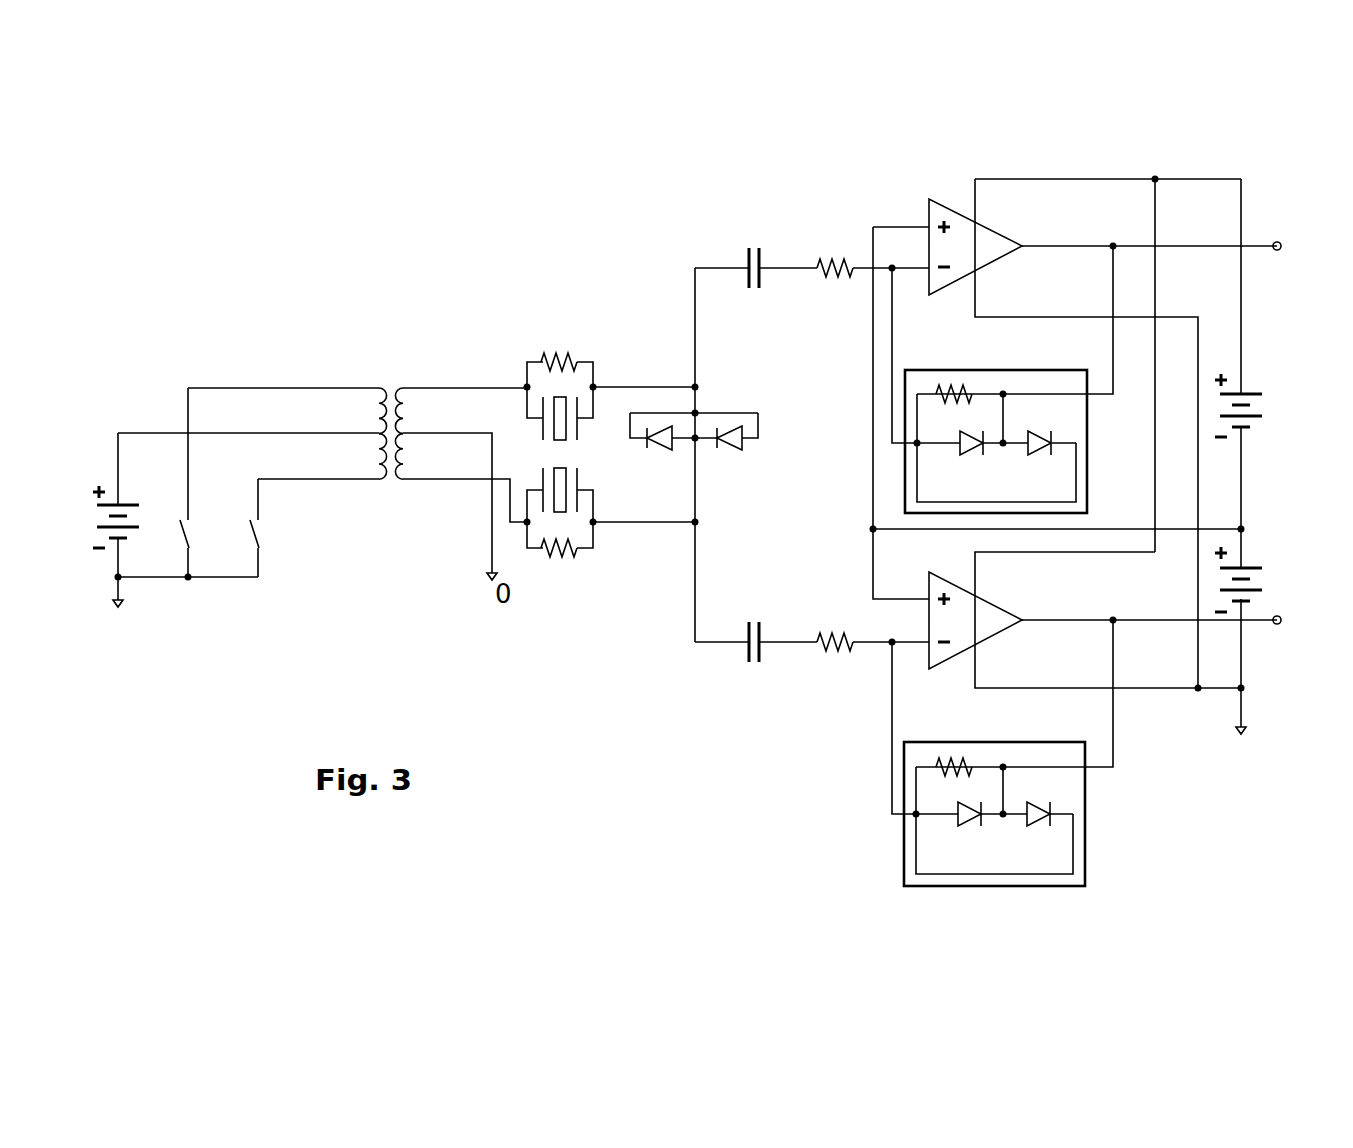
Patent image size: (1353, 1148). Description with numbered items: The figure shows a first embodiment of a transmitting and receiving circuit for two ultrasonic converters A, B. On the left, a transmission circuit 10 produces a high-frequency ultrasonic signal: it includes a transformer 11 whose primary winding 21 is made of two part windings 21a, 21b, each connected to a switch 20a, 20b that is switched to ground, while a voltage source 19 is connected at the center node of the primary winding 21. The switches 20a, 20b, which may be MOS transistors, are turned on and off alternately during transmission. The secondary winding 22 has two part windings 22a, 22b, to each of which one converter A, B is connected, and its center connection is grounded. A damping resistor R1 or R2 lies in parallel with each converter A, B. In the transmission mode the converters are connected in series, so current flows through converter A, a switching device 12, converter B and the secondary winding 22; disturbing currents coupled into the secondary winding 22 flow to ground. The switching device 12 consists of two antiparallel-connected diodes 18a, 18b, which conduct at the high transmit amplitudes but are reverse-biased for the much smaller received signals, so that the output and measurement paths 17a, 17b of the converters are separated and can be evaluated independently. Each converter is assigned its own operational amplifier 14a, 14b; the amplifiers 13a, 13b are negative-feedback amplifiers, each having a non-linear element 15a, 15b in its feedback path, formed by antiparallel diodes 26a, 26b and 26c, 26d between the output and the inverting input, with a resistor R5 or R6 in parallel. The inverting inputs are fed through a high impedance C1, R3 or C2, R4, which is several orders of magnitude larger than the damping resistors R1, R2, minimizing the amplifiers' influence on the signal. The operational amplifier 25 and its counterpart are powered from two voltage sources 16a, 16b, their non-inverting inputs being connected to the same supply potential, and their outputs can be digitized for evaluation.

The transmission circuit 10 is at (193, 335).
The transformer 11 is at (386, 333).
The switching device 12 is at (746, 391).
The negative-feedback amplifier 13a is at (1137, 221).
The negative-feedback amplifier 13b is at (1092, 646).
The operational amplifier 14a is at (985, 244).
The operational amplifier 14b is at (985, 618).
The non-linear element 15a is at (1087, 428).
The non-linear element 15b is at (1087, 830).
The voltage source 16a is at (1258, 410).
The voltage source 16b is at (1258, 585).
The output path 17a is at (715, 266).
The measurement path 17b is at (708, 646).
The diode 18a is at (660, 450).
The diode 18b is at (752, 452).
The voltage source 19 is at (96, 521).
The switch 20a is at (181, 531).
The switch 20b is at (250, 531).
The primary winding 21 is at (372, 507).
The part winding 21a is at (372, 411).
The part winding 21b is at (372, 458).
The secondary winding 22 is at (407, 508).
The part winding 22a is at (411, 411).
The part winding 22b is at (411, 458).
The operational amplifier 25 is at (934, 167).
The diode 26a is at (970, 450).
The diode 26b is at (1040, 450).
The diode 26c is at (969, 822).
The diode 26d is at (1039, 822).
The damping resistor R1 is at (558, 350).
The damping resistor R2 is at (563, 554).
The resistor R3 is at (830, 257).
The resistor R4 is at (830, 655).
The resistor R5 is at (949, 386).
The resistor R6 is at (949, 760).
The capacitor C1 is at (762, 258).
The capacitor C2 is at (762, 650).
The ultrasonic converter A is at (561, 441).
The ultrasonic converter B is at (561, 472).